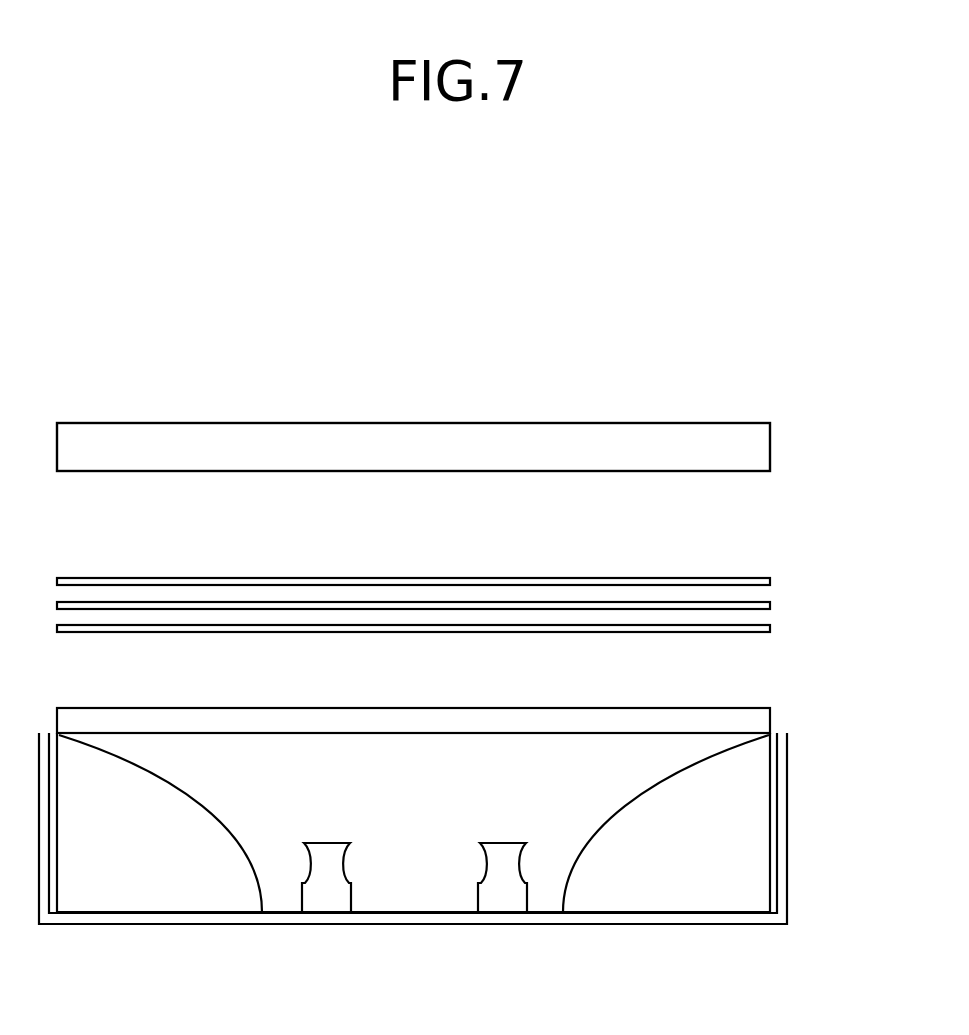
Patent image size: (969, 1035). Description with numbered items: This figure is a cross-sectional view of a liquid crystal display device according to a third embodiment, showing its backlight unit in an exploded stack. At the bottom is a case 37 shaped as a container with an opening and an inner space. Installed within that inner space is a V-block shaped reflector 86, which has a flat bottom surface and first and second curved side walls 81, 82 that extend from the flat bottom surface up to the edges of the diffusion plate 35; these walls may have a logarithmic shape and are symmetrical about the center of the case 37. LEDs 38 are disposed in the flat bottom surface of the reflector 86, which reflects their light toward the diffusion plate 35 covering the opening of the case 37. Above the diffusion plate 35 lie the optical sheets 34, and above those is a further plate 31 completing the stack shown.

The light guide plate 31 is at (750, 438).
The optical sheets 34 is at (783, 573).
The diffusion plate 35 is at (760, 724).
The case 37 is at (787, 923).
The LEDs 38 is at (502, 863).
The first curved side wall 81 is at (165, 775).
The second curved side wall 82 is at (643, 785).
The V-block shaped reflector 86 is at (693, 875).